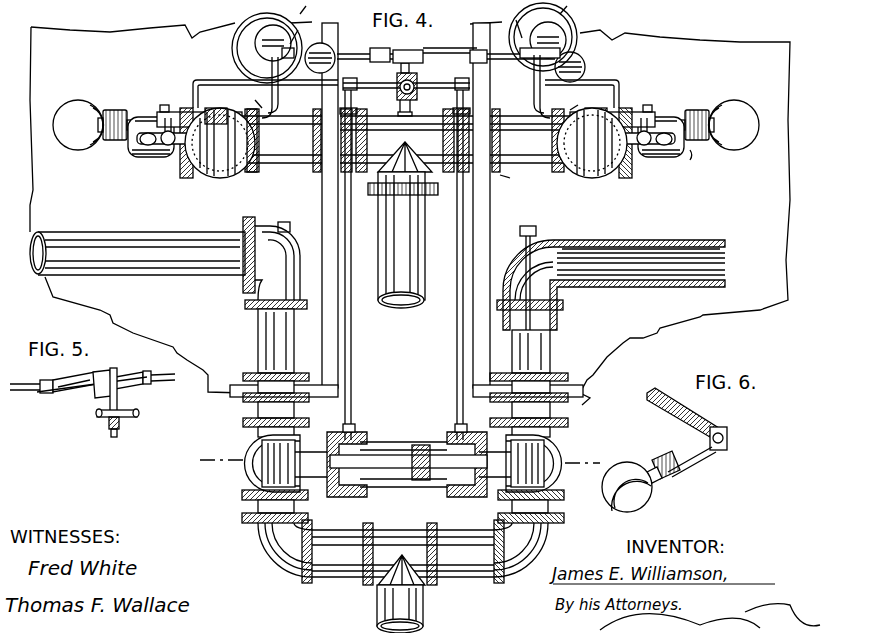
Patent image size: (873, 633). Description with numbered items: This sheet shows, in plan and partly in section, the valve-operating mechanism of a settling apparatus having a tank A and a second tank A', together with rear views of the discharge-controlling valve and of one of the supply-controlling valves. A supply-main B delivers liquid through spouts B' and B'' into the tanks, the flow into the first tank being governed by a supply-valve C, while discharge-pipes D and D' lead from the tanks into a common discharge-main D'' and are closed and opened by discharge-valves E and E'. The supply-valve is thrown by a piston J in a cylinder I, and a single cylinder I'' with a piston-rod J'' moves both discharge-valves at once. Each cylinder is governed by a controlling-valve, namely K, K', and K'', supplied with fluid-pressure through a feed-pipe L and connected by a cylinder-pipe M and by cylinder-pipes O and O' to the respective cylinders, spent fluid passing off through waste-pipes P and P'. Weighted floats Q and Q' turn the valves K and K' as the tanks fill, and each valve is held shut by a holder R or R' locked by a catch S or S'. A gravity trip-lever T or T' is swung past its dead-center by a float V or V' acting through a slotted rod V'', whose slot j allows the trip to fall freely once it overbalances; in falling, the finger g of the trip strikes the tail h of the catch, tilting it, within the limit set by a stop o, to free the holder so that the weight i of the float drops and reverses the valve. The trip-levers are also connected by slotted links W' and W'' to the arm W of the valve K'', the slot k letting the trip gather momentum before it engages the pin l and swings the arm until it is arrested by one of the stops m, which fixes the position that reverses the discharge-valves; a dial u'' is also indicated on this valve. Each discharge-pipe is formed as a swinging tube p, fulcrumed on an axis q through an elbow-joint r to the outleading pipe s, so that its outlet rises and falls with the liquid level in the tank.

In FIG. 4, the tank A is at (613, 210).
In FIG. 4, the tank A' is at (194, 210).
In FIG. 4, the supply-main B is at (399, 225).
In FIG. 4, the spout B' is at (676, 153).
In FIG. 4, the spout B'' is at (136, 143).
In FIG. 4, the supply-valve C is at (522, 186).
In FIG. 4, the discharge-pipe D is at (641, 246).
In FIG. 4, the discharge-pipe D' is at (142, 250).
In FIG. 4, the discharge-main D'' is at (403, 561).
In FIG. 4, the discharge-valve E is at (539, 463).
In FIG. 4, the discharge-valve E' is at (263, 475).
In FIG. 4, the cylinder I is at (630, 154).
In FIG. 4, the cylinder I'' is at (407, 456).
In FIG. 4, the piston J is at (421, 449).
In FIG. 4, the piston-rod J'' is at (408, 484).
In FIG. 4, the controlling-valve K is at (639, 159).
In FIG. 6, the controlling-valve K is at (708, 452).
In FIG. 4, the controlling-valve K' is at (171, 157).
In FIG. 4, the controlling-valve K'' is at (422, 79).
In FIG. 5, the controlling-valve K'' is at (112, 440).
In FIG. 4, the feed-pipe L is at (406, 104).
In FIG. 4, the cylinder-pipe M is at (165, 146).
In FIG. 4, the cylinder-pipe O is at (450, 259).
In FIG. 4, the cylinder-pipe O' is at (355, 259).
In FIG. 4, the waste-pipe P is at (627, 153).
In FIG. 4, the waste-pipe P' is at (187, 152).
In FIG. 4, the float Q is at (733, 125).
In FIG. 6, the float Q is at (627, 487).
In FIG. 4, the float Q' is at (78, 125).
In FIG. 4, the holder R is at (628, 111).
In FIG. 6, the holder R is at (682, 414).
In FIG. 4, the holder R' is at (189, 105).
In FIG. 4, the catch S is at (634, 137).
In FIG. 4, the catch S' is at (179, 130).
In FIG. 4, the trip-lever T is at (531, 135).
In FIG. 4, the trip-lever T' is at (333, 130).
In FIG. 4, the float V is at (558, 37).
In FIG. 4, the float V' is at (253, 48).
In FIG. 4, the slotted rod V'' is at (440, 10).
In FIG. 4, the arm W is at (408, 47).
In FIG. 5, the arm W is at (88, 404).
In FIG. 4, the slotted link W' is at (512, 45).
In FIG. 5, the slotted link W' is at (31, 397).
In FIG. 4, the slotted link W'' is at (365, 47).
In FIG. 5, the slotted link W'' is at (145, 387).
In FIG. 4, the finger g is at (272, 62).
In FIG. 4, the tail h is at (409, 99).
In FIG. 4, the weight i is at (694, 161).
In FIG. 6, the weight i is at (668, 478).
In FIG. 4, the slot j is at (406, 25).
In FIG. 4, the slot k is at (450, 42).
In FIG. 5, the slot k is at (75, 381).
In FIG. 5, the pin l is at (90, 393).
In FIG. 5, the stop m is at (99, 420).
In FIG. 4, the stop o is at (406, 105).
In FIG. 4, the swinging tube p is at (32, 250).
In FIG. 4, the axis q is at (542, 220).
In FIG. 4, the elbow-joint r is at (292, 240).
In FIG. 4, the outleading pipe s is at (259, 331).
In FIG. 4, the dial u'' is at (420, 52).